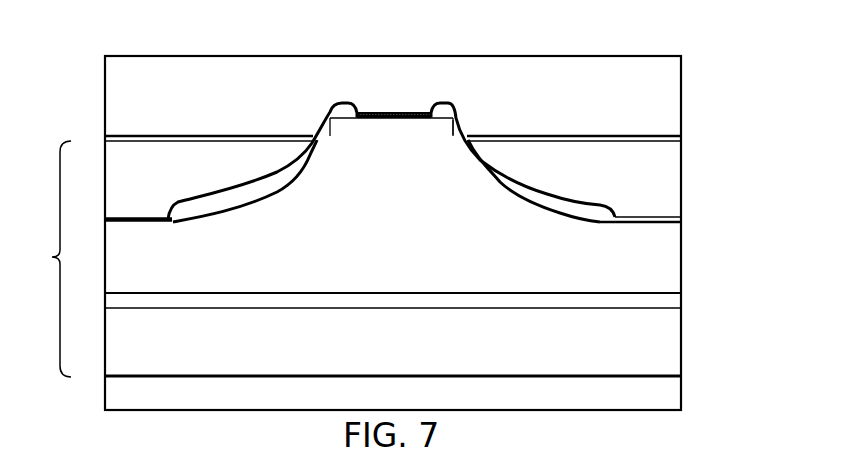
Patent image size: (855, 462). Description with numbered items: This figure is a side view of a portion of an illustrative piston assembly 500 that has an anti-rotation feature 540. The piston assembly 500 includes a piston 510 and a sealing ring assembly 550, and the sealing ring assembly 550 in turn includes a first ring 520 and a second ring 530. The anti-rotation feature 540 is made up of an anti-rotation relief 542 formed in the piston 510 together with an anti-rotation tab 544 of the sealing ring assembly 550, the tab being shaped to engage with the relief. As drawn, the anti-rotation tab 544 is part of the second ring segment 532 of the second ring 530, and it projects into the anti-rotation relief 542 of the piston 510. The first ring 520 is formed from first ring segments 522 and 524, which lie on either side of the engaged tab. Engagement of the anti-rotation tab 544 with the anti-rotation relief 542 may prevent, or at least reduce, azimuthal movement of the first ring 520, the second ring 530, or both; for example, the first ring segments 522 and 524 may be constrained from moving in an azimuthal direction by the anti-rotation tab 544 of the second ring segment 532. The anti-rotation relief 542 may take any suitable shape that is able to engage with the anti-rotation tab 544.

The piston assembly 500 is at (663, 44).
The piston 510 is at (648, 108).
The first ring 520 is at (692, 171).
The first ring segment 522 is at (187, 184).
The first ring segment 524 is at (630, 184).
The second ring 530 is at (693, 256).
The second ring segment 532 is at (457, 272).
The anti-rotation feature 540 is at (428, 100).
The anti-rotation relief 542 is at (383, 111).
The anti-rotation tab 544 is at (438, 133).
The sealing ring assembly 550 is at (40, 259).